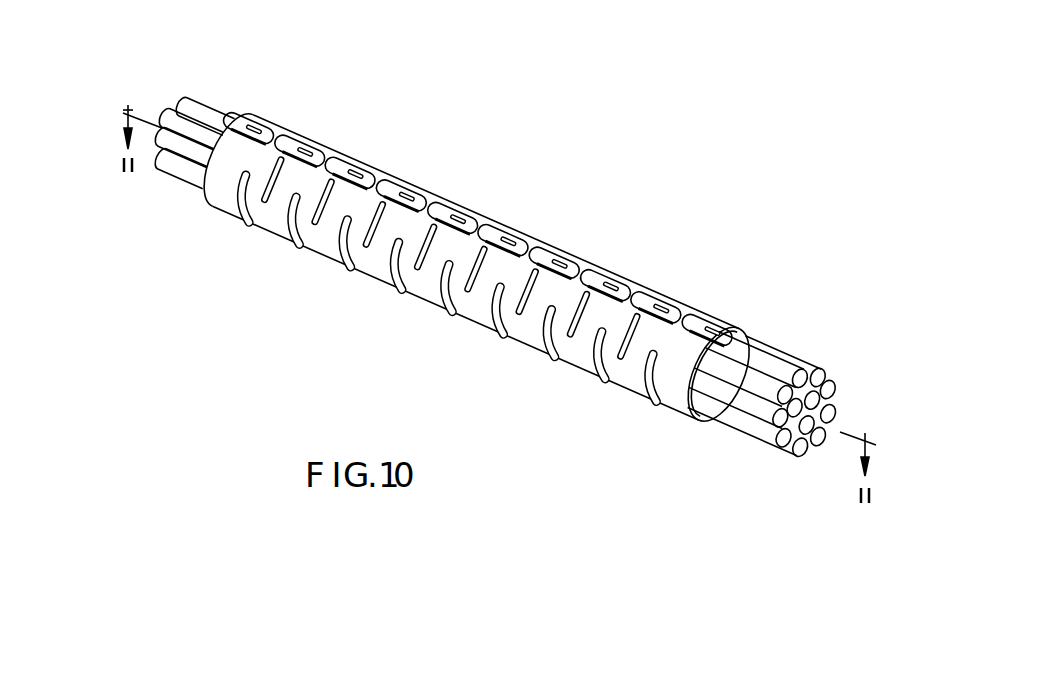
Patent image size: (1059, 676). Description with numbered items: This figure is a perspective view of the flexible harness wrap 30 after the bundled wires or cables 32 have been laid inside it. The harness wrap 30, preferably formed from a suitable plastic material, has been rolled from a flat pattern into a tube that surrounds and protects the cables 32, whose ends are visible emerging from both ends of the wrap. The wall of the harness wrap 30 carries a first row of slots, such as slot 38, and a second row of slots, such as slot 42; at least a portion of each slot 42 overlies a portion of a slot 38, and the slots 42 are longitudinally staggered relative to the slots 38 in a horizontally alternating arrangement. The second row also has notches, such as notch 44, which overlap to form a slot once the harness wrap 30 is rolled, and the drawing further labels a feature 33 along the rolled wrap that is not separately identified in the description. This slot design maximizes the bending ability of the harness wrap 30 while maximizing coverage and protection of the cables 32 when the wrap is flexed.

The harness wrap 30 is at (510, 197).
The cables 32 is at (207, 113).
The tabs 33 is at (407, 187).
The slot 38 is at (375, 268).
The slot 42 is at (373, 187).
The notch 44 is at (360, 198).